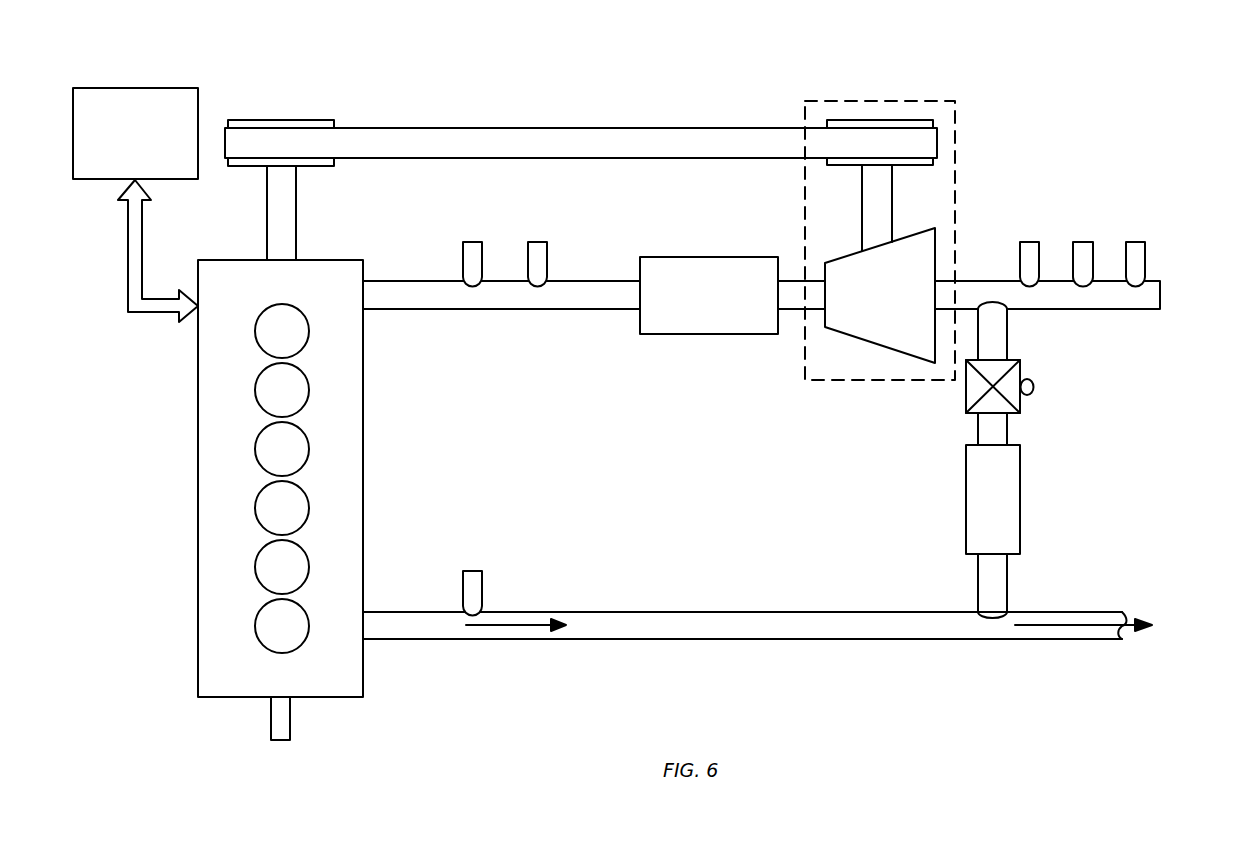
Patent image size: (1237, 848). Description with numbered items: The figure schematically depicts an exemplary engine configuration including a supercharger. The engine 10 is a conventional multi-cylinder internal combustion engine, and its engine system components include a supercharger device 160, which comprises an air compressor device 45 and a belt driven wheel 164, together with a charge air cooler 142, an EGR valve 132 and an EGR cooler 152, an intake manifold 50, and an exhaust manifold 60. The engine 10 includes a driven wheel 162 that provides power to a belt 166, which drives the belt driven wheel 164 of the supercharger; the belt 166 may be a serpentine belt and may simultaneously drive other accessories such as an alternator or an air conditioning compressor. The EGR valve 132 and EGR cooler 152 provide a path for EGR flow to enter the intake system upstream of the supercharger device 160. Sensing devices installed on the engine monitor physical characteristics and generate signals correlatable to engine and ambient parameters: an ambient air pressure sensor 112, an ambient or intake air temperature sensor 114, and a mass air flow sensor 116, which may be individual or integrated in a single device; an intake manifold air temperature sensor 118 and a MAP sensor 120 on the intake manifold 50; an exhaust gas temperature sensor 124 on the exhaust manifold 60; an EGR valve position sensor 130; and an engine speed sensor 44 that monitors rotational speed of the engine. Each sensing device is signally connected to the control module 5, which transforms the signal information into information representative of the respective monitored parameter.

The control module 5 is at (183, 112).
The engine 10 is at (357, 270).
The engine speed sensor 44 is at (287, 727).
The air compressor device 45 is at (913, 259).
The intake manifold 50 is at (406, 300).
The exhaust manifold 60 is at (640, 632).
The ambient air pressure sensor 112 is at (1140, 252).
The ambient or intake air temperature sensor 114 is at (1085, 255).
The mass air flow sensor 116 is at (1030, 250).
The intake manifold air temperature sensor 118 is at (543, 253).
The MAP sensor 120 is at (478, 255).
The exhaust gas temperature sensor 124 is at (472, 580).
The EGR valve position sensor 130 is at (1034, 387).
The EGR valve 132 is at (975, 392).
The charge air cooler 142 is at (705, 268).
The EGR cooler 152 is at (1010, 494).
The supercharger device 160 is at (940, 101).
The driven wheel 162 is at (282, 120).
The belt driven wheel 164 is at (848, 120).
The belt 166 is at (553, 128).